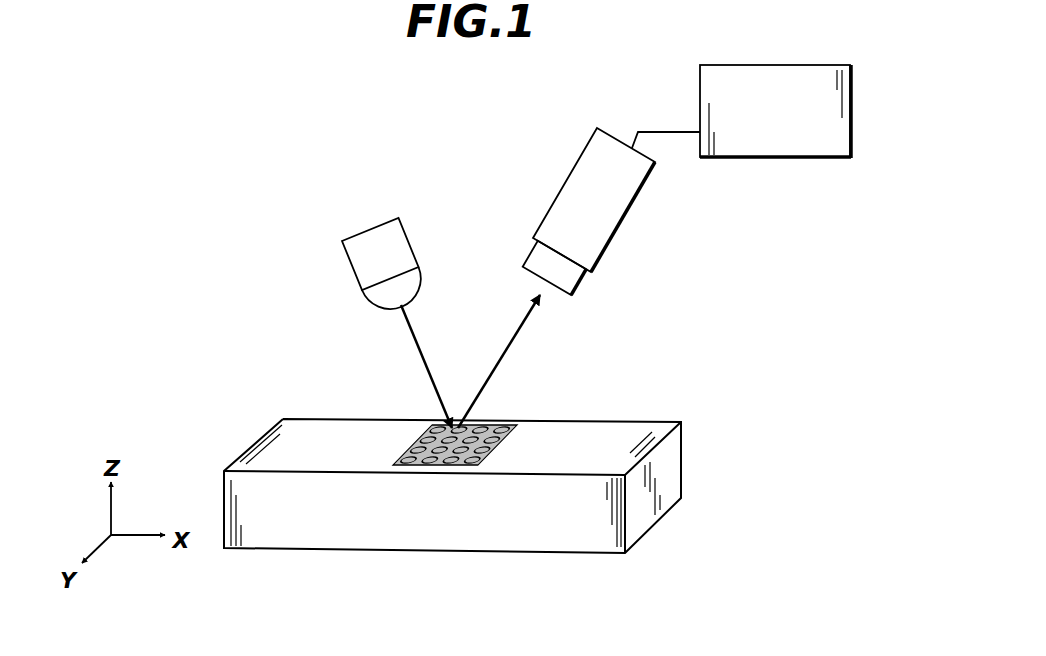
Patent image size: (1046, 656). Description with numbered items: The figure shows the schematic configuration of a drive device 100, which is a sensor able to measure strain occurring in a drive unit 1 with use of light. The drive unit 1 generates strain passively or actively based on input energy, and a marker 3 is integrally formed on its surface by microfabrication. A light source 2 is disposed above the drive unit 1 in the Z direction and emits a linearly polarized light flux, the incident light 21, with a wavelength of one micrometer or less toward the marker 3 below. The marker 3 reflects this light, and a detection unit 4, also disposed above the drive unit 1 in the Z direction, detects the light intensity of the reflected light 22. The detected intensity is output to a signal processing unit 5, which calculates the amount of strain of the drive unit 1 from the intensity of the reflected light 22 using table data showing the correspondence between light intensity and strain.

The drive device 100 is at (452, 158).
The drive unit 1 is at (538, 540).
The light source 2 is at (358, 265).
The marker 3 is at (412, 445).
The detection unit 4 is at (605, 223).
The signal processing unit 5 is at (782, 78).
The incident light 21 is at (405, 323).
The reflected light 22 is at (527, 323).